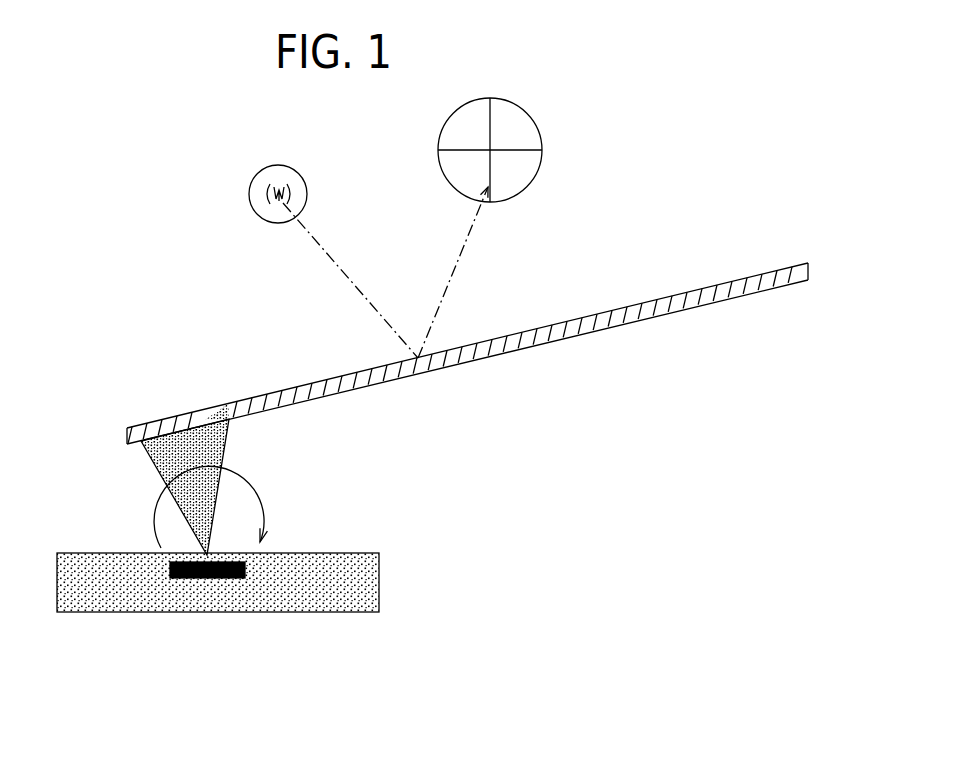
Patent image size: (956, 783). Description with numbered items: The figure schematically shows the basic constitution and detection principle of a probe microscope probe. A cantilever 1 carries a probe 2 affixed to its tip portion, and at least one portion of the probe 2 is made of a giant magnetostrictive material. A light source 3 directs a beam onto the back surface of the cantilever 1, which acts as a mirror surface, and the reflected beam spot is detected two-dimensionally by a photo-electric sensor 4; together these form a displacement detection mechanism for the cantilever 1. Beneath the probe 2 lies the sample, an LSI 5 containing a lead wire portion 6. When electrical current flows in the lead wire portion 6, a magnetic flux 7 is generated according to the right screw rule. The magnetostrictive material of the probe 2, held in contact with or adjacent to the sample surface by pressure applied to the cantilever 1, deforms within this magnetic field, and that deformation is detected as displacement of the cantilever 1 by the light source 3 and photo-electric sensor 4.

The cantilever 1 is at (592, 330).
The probe 2 is at (171, 430).
The light source 3 is at (258, 210).
The photo-electric sensor 4 is at (522, 159).
The LSI 5 is at (355, 589).
The lead wire portion 6 is at (208, 577).
The magnetic flux 7 is at (226, 502).